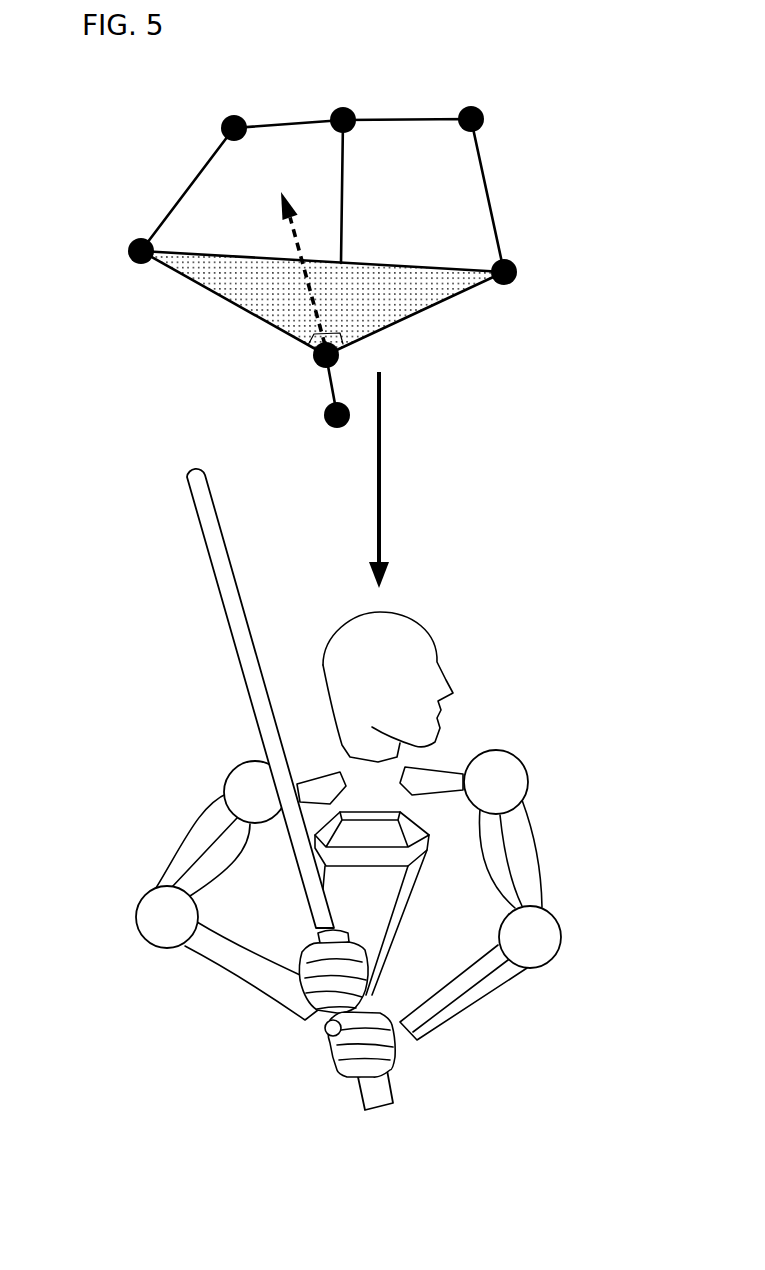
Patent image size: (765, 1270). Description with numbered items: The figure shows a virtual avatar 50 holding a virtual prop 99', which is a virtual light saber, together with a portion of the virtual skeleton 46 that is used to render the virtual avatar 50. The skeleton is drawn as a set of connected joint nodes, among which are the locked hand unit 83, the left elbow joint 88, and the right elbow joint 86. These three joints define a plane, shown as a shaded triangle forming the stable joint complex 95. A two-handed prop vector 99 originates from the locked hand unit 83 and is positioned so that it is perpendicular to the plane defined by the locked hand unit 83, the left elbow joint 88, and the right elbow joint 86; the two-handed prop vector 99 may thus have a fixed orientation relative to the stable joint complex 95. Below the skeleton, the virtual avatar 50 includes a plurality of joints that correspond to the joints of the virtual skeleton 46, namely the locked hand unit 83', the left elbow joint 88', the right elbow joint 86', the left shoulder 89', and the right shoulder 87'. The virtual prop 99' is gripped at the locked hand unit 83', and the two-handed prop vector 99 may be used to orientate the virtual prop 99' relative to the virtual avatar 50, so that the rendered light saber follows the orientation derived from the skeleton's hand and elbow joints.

The virtual skeleton 46 is at (268, 72).
The two-handed prop vector 99 is at (297, 257).
The right elbow joint 86 is at (107, 236).
The left elbow joint 88 is at (542, 258).
The stable joint complex 95 is at (251, 303).
The locked hand unit 83 is at (290, 379).
The virtual avatar 50 is at (368, 680).
The virtual prop 99' is at (255, 789).
The right shoulder 87' is at (255, 792).
The left shoulder 89' is at (496, 782).
The right elbow joint 86' is at (167, 917).
The left elbow joint 88' is at (530, 937).
The locked hand unit 83' is at (308, 1016).